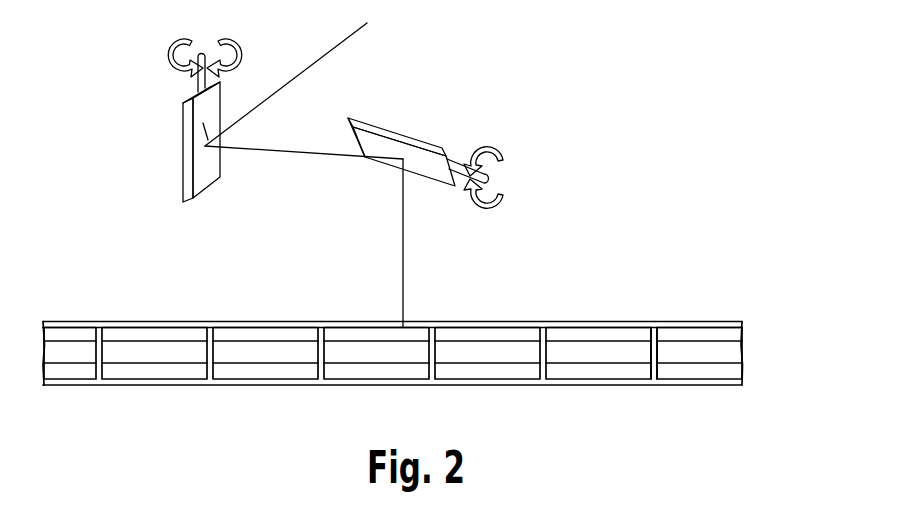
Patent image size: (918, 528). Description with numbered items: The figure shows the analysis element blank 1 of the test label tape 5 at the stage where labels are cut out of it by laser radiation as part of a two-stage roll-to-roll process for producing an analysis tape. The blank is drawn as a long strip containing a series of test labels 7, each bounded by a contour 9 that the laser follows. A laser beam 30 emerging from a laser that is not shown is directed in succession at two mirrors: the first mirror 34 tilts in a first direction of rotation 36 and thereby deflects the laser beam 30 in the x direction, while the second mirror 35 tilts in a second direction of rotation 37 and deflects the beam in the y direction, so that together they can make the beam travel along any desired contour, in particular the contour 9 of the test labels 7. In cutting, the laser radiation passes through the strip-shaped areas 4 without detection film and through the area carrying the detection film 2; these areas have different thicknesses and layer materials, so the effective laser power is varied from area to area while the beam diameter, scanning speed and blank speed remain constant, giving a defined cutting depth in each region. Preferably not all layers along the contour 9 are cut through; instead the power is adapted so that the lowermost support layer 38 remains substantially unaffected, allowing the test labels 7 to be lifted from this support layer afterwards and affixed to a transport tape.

The analysis element blank 1 is at (267, 393).
The detection film 2 is at (286, 348).
The strip-shaped areas 4 is at (732, 333).
The test label tape 5 is at (140, 297).
The test labels 7 is at (257, 333).
The contour 9 is at (546, 333).
The laser beam 30 is at (367, 23).
The first mirror 34 is at (200, 143).
The second mirror 35 is at (383, 151).
The first direction of rotation 36 is at (168, 62).
The second direction of rotation 37 is at (482, 144).
The lowermost support layer 38 is at (648, 320).